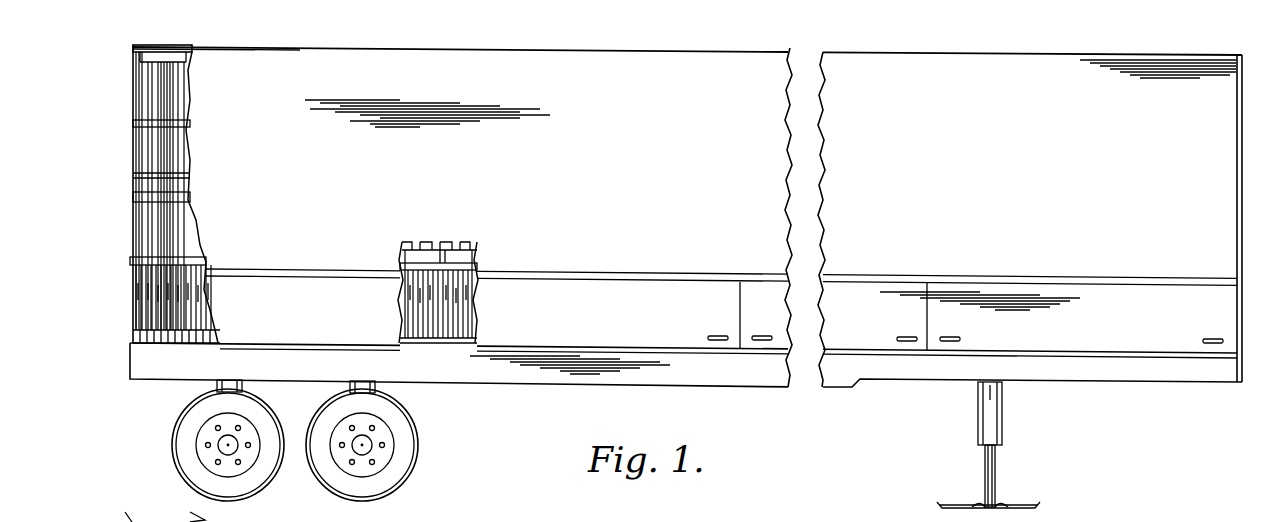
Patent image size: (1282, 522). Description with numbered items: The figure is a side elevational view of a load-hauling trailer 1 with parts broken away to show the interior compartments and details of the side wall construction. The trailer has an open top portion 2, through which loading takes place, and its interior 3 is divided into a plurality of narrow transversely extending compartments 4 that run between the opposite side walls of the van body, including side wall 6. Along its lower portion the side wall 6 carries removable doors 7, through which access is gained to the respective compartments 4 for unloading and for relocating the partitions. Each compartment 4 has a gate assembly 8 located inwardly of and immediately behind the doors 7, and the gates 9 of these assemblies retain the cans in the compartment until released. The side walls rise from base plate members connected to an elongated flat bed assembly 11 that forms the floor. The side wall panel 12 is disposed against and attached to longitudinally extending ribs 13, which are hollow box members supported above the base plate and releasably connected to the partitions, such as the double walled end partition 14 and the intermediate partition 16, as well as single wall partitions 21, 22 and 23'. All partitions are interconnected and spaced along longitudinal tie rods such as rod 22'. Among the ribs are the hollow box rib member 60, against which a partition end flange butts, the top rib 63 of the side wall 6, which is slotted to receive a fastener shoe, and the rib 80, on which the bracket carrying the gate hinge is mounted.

The load-hauling trailer 1 is at (1243, 190).
The open top portion 2 is at (1232, 57).
The interior 3 is at (140, 58).
The compartments 4 is at (157, 26).
The side wall 6 is at (570, 49).
The removable doors 7 is at (757, 272).
The gate assembly 8 is at (190, 279).
The gates 9 is at (200, 312).
The flat bed assembly 11 is at (1240, 372).
The side wall panel 12 is at (305, 49).
The longitudinally extending ribs 13 is at (152, 182).
The end partition 14 is at (134, 108).
The intermediate partition 16 is at (452, 247).
The single wall partition 21 is at (175, 140).
The single wall partition 22 is at (438, 278).
The tie rod 22' is at (133, 196).
The single wall partition 23' is at (476, 250).
The hollow box rib member 60 is at (162, 120).
The top rib 63 is at (140, 45).
The rib 80 is at (131, 261).